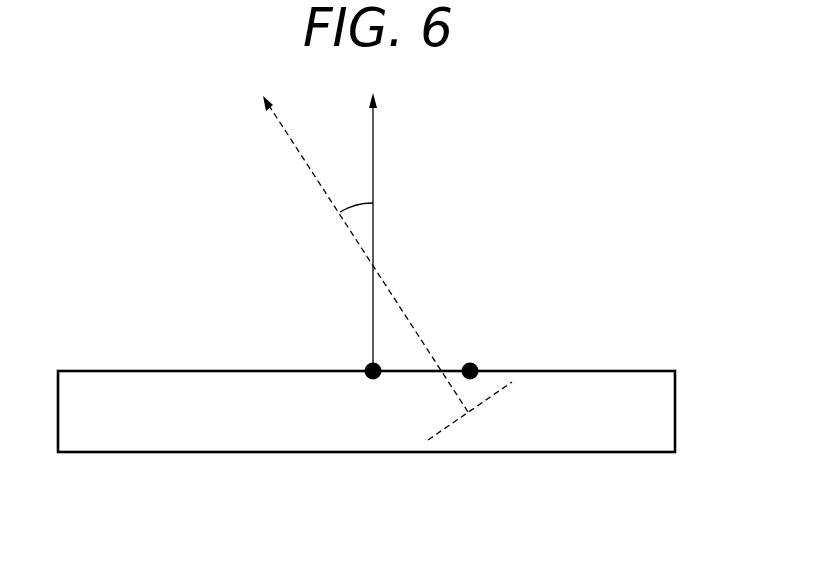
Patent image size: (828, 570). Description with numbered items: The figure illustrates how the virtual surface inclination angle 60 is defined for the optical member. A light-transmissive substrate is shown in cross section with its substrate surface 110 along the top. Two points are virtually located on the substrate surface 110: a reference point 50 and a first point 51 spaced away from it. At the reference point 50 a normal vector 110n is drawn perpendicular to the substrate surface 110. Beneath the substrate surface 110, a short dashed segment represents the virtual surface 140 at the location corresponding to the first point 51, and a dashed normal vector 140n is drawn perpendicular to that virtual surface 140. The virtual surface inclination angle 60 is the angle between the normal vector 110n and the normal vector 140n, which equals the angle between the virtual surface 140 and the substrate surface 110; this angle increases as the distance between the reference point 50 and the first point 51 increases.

The substrate surface 110 is at (605, 360).
The normal vector to the substrate surface 110n is at (373, 147).
The virtual surface 140 is at (446, 428).
The normal vector to the virtual surface 140n is at (285, 136).
The reference point 50 is at (366, 366).
The first point 51 is at (474, 364).
The virtual surface inclination angle 60 is at (357, 203).